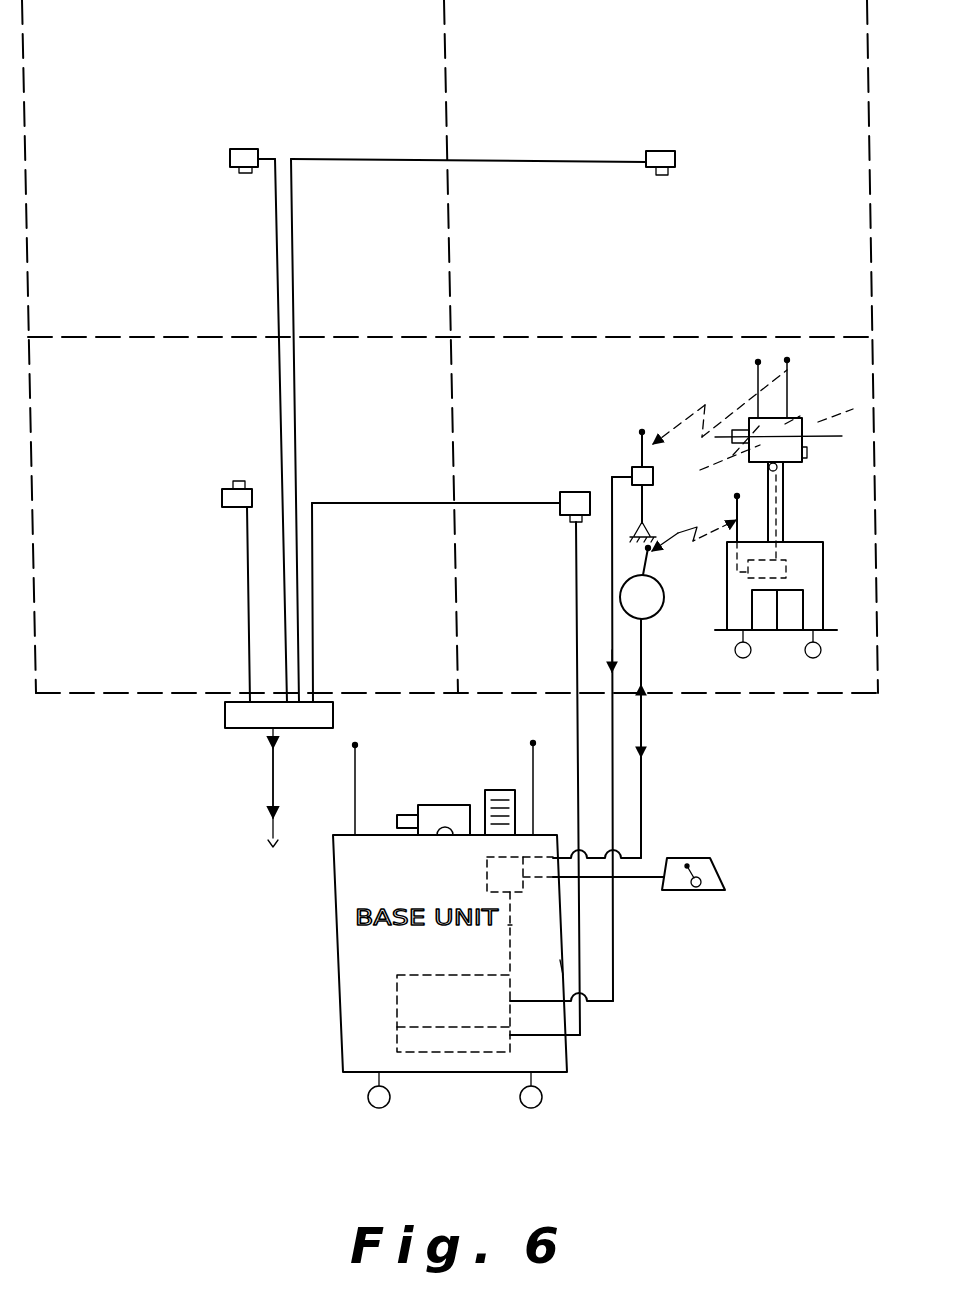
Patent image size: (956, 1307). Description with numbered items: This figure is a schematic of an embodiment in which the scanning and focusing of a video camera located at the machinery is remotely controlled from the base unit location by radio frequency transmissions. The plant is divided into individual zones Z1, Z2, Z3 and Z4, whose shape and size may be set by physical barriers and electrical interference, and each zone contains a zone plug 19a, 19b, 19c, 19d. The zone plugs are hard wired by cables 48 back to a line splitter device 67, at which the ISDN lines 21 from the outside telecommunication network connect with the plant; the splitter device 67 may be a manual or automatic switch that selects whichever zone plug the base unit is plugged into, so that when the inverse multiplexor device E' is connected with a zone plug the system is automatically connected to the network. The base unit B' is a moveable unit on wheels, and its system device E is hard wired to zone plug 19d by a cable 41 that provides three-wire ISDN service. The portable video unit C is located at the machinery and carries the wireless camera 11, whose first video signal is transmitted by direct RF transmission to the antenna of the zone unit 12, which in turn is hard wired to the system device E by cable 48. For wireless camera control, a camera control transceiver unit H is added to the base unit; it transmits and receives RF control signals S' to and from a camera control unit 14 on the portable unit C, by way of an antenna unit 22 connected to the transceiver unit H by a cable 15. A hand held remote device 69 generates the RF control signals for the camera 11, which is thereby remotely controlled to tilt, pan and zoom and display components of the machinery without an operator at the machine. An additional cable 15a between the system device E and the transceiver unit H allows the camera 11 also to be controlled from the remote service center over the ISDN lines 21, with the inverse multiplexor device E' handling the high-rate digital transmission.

The zone Z1 is at (82, 30).
The zone Z2 is at (498, 30).
The zone Z3 is at (84, 376).
The zone Z4 is at (500, 381).
The zone plug 19a is at (230, 152).
The zone plug 19b is at (675, 158).
The zone plug 19c is at (222, 497).
The zone plug 19d is at (565, 493).
The line splitter device 67 is at (225, 713).
The ISDN lines 21 is at (270, 790).
The zone unit 12 is at (627, 459).
The antenna unit 22 is at (642, 583).
The cable 15 is at (644, 732).
The cable 41 is at (579, 770).
The cable 48 is at (613, 805).
The video camera 11 is at (808, 427).
The portable video unit C is at (793, 523).
The camera control unit 14 is at (743, 579).
The RF control signal S' is at (694, 556).
The camera control transceiver unit H is at (532, 892).
The system device E is at (389, 994).
The inverse multiplexor device E' is at (513, 1048).
The additional cable 15a is at (508, 925).
The base unit B' is at (628, 986).
The hand held remote device 69 is at (720, 865).